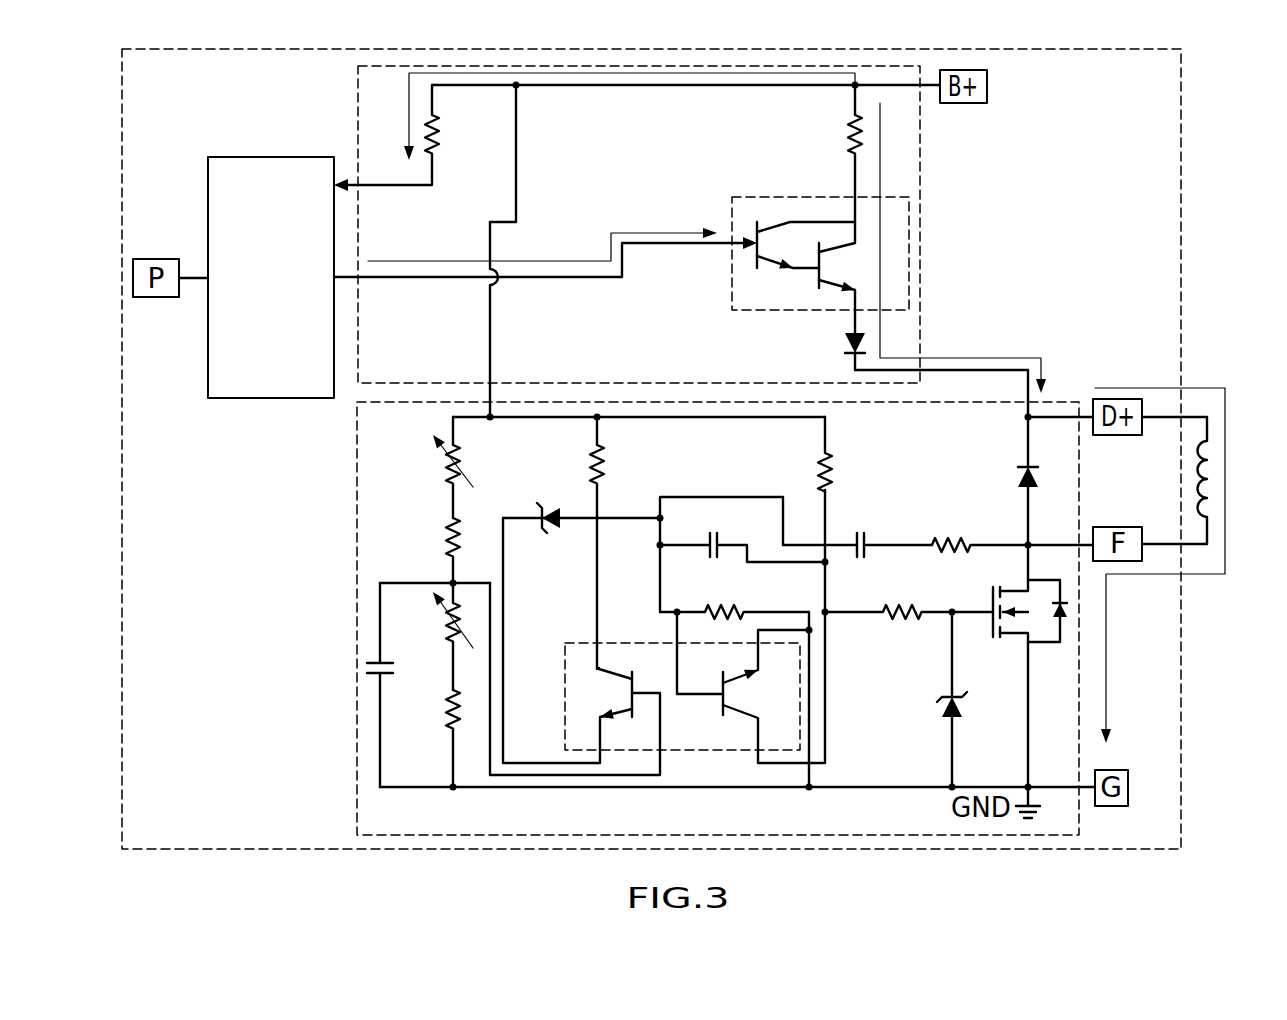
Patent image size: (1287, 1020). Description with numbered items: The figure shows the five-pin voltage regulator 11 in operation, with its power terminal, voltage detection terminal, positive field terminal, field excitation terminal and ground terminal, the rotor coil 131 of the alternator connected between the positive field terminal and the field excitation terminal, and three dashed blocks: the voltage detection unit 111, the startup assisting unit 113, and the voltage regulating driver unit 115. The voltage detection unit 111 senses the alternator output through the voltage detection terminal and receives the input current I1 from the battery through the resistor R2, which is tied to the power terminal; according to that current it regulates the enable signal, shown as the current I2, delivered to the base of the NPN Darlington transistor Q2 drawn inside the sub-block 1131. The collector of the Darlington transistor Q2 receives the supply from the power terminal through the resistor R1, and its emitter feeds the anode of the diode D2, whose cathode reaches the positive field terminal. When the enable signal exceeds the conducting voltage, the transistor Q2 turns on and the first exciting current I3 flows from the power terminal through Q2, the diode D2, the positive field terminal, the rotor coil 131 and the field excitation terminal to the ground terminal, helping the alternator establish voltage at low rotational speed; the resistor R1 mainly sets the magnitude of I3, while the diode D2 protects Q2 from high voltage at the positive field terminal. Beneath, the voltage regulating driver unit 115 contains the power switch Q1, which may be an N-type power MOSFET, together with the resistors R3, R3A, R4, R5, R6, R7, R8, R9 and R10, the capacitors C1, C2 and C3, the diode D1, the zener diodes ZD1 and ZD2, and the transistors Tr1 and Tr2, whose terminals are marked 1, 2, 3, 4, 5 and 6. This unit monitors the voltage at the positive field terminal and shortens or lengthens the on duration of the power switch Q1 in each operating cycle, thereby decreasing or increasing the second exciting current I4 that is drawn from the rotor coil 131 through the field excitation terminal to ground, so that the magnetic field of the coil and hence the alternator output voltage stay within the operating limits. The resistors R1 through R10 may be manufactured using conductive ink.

The voltage regulator 11 is at (1181, 663).
The voltage detection unit 111 is at (235, 155).
The startup assisting unit 113 is at (920, 163).
The Darlington transistor Q2 1131 is at (772, 265).
The voltage regulating driver unit 115 is at (357, 500).
The rotor coil 131 is at (1219, 480).
The Tr2 terminal 1 is at (770, 658).
The Tr2 base terminal 2 is at (689, 658).
The Tr1 collector terminal 3 is at (607, 658).
The Tr1 emitter terminal 4 is at (607, 735).
The Tr1 base terminal 5 is at (668, 735).
The Tr2 terminal 6 is at (770, 735).
The resistor R1 is at (835, 153).
The resistor R2 is at (408, 138).
The resistor R3 is at (432, 550).
The variable resistor R3A is at (428, 467).
The resistor R4 is at (438, 636).
The resistor R5 is at (432, 738).
The resistor R6 is at (620, 543).
The resistor R7 is at (734, 678).
The resistor R8 is at (847, 454).
The resistor R9 is at (1012, 527).
The resistor R10 is at (909, 594).
The capacitor C1 is at (888, 529).
The capacitor C2 is at (742, 532).
The capacitor C3 is at (401, 685).
The diode D1 is at (1008, 481).
The diode D2 is at (916, 373).
The zener diode ZD1 is at (549, 502).
The zener diode ZD2 is at (922, 699).
The power switch Q1 is at (1028, 666).
The NPN Darlington transistor Q2 is at (806, 277).
The transistor Tr1 is at (581, 640).
The transistor Tr2 is at (774, 626).
The input current I1 is at (618, 116).
The current I2 is at (542, 245).
The first exciting current I3 is at (963, 248).
The second exciting current I4 is at (1176, 565).